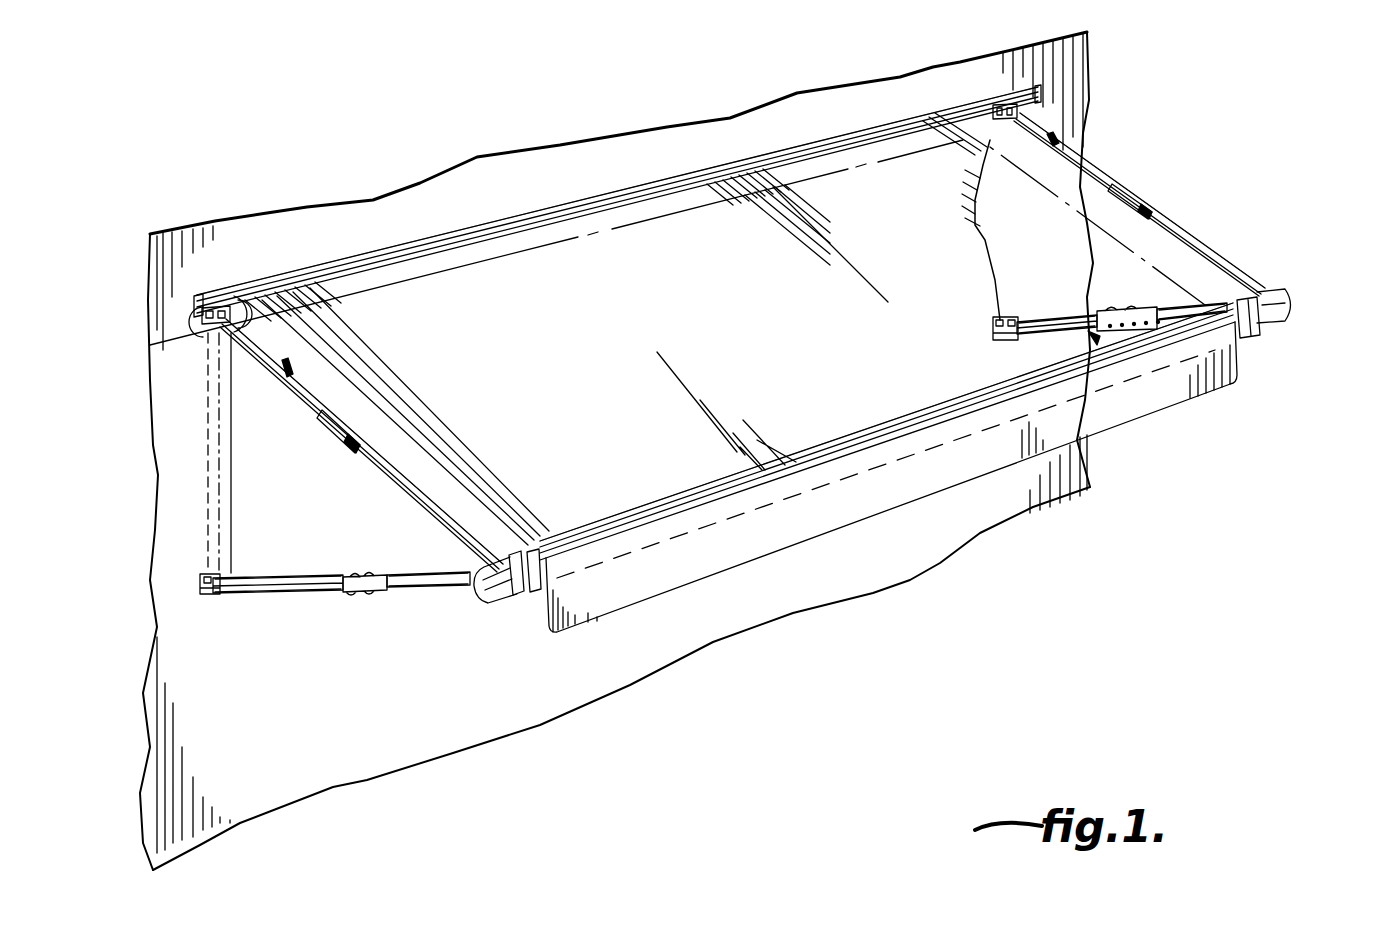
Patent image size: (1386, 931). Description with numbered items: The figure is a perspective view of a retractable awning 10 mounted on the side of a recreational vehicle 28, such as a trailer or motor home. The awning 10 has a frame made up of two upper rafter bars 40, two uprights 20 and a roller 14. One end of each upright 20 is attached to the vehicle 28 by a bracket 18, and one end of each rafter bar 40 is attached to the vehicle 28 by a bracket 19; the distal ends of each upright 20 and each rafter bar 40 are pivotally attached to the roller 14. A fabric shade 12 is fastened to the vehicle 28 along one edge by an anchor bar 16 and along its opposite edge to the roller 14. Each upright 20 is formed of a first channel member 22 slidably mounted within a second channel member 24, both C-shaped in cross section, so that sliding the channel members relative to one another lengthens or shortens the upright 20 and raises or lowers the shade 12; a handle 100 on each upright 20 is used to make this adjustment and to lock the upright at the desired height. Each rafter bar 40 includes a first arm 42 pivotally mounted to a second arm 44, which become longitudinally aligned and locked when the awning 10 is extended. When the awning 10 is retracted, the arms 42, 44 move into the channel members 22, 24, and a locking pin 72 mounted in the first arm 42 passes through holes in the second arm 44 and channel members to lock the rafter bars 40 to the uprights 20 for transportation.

The retractable awning 10 is at (662, 165).
The shade 12 is at (763, 217).
The roller 14 is at (1287, 291).
The anchor bar 16 is at (498, 222).
The bracket 18 is at (200, 578).
The bracket 19 is at (197, 330).
The upright 20 is at (207, 467).
The first channel member 22 is at (245, 597).
The second channel member 24 is at (448, 597).
The recreational vehicle 28 is at (355, 750).
The rafter bar 40 is at (322, 463).
The first arm 42 is at (308, 404).
The second arm 44 is at (404, 496).
The locking pin 72 is at (288, 370).
The handle 100 is at (373, 597).